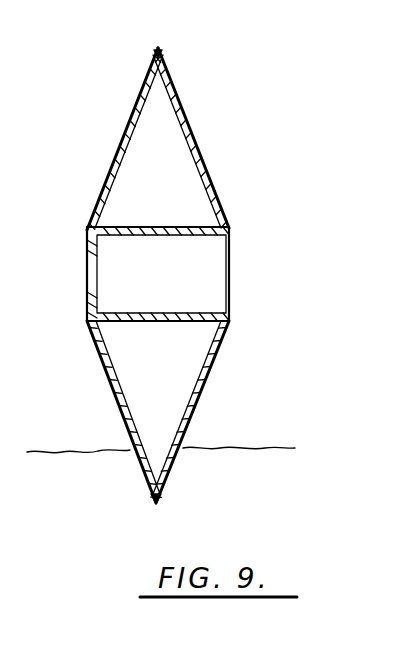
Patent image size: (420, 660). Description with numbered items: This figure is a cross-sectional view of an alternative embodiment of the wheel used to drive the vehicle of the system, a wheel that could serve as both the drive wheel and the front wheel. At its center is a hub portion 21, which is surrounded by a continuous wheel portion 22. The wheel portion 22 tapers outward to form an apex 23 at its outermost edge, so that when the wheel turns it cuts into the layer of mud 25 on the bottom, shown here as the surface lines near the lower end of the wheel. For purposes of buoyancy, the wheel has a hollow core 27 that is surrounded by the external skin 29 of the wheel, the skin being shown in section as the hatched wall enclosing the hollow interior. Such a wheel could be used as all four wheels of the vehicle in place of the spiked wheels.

The hub portion 21 is at (92, 282).
The continuous wheel portion 22 is at (123, 134).
The apex 23 is at (163, 51).
The layer of mud 25 is at (226, 465).
The hollow core 27 is at (171, 379).
The external skin 29 is at (122, 423).